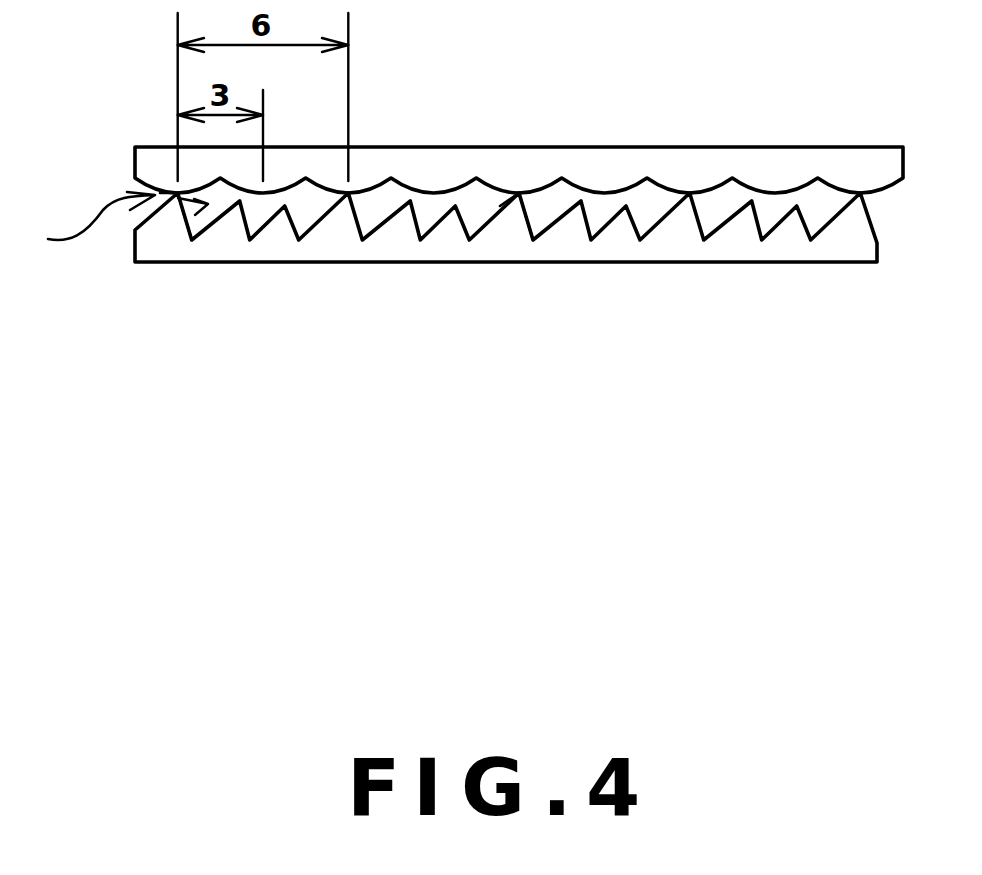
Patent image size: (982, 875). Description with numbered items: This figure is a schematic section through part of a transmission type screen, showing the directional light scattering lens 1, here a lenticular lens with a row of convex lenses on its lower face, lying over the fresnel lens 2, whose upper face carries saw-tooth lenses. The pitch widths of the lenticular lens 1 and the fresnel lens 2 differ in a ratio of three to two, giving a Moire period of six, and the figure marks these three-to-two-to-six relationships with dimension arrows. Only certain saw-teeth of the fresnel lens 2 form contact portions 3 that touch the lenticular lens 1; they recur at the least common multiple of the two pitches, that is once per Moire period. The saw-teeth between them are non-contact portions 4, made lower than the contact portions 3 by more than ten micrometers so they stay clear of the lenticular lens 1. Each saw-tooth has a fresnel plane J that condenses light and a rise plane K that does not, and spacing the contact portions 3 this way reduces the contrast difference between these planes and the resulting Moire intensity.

The directional light scattering lens 1 is at (839, 164).
The fresnel lens 2 is at (780, 250).
The contact portion 3 is at (87, 227).
The non-contact portion 4 is at (178, 195).
The fresnel plane J is at (507, 209).
The rise plane K is at (517, 197).